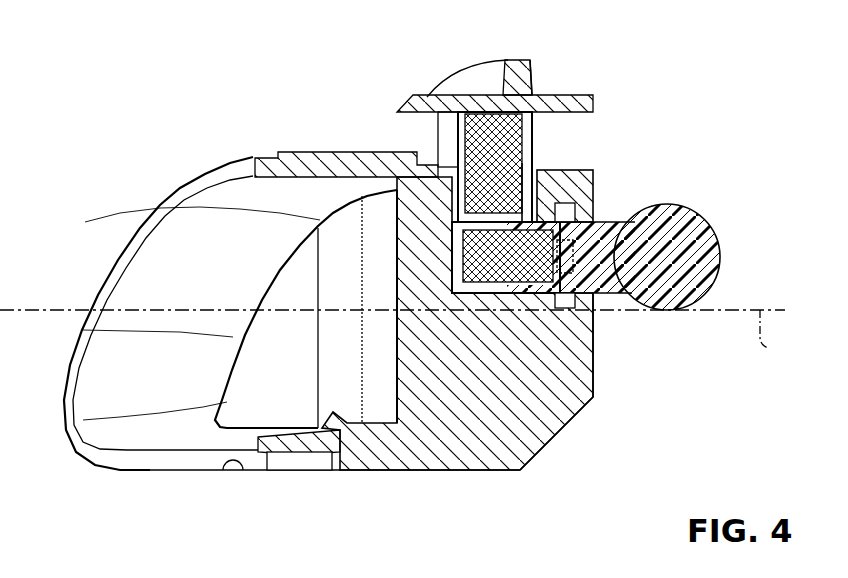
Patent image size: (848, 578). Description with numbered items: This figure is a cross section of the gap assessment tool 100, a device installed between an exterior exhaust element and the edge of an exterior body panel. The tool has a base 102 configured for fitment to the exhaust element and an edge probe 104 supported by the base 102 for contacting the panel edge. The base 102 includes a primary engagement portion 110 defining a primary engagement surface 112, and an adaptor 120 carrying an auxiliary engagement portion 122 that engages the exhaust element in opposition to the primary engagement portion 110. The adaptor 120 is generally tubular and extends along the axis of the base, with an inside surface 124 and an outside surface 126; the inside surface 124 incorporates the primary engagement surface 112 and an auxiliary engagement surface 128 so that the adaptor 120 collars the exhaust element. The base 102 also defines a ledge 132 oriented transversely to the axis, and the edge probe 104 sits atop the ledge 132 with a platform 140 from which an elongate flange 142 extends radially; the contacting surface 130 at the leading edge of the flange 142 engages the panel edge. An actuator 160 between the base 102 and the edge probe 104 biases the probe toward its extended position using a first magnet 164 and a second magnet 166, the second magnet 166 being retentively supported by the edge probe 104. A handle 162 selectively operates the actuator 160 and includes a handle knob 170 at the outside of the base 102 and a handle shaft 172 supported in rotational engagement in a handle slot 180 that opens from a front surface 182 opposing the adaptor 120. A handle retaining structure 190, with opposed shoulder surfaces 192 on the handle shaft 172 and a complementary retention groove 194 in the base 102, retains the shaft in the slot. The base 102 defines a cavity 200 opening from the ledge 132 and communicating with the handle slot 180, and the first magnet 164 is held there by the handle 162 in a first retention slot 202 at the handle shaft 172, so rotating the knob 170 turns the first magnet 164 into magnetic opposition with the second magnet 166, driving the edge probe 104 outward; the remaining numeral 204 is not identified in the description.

The gap assessment tool 100 is at (402, 273).
The base 102 is at (495, 355).
The edge probe 104 is at (508, 62).
The primary engagement portion 110 is at (158, 276).
The primary engagement surface 112 is at (297, 203).
The adaptor 120 is at (267, 301).
The auxiliary engagement portion 122 is at (140, 472).
The inside surface 124 is at (240, 327).
The outside surface 126 is at (152, 213).
The auxiliary engagement surface 128 is at (177, 439).
The contacting surface 130 is at (528, 51).
The ledge 132 is at (540, 178).
The platform 140 is at (593, 106).
The elongate flange 142 is at (535, 77).
The actuator 160 is at (338, 119).
The handle 162 is at (655, 236).
The first magnet 164 is at (346, 139).
The second magnet 166 is at (363, 114).
The handle knob 170 is at (703, 214).
The handle shaft 172 is at (643, 192).
The handle slot 180 is at (532, 181).
The front surface 182 is at (594, 385).
The handle retaining structure 190 is at (640, 312).
The shoulder surfaces 192 is at (641, 291).
The retention groove 194 is at (569, 306).
The cavity 200 is at (535, 178).
The first retention slot 202 is at (400, 178).
The sleeve portion 204 is at (463, 127).